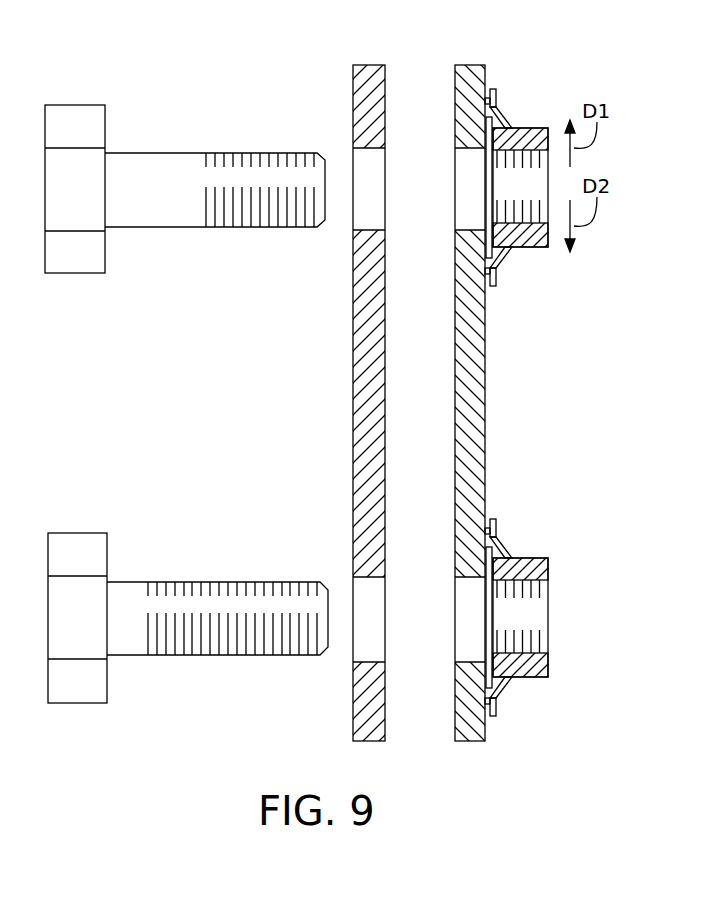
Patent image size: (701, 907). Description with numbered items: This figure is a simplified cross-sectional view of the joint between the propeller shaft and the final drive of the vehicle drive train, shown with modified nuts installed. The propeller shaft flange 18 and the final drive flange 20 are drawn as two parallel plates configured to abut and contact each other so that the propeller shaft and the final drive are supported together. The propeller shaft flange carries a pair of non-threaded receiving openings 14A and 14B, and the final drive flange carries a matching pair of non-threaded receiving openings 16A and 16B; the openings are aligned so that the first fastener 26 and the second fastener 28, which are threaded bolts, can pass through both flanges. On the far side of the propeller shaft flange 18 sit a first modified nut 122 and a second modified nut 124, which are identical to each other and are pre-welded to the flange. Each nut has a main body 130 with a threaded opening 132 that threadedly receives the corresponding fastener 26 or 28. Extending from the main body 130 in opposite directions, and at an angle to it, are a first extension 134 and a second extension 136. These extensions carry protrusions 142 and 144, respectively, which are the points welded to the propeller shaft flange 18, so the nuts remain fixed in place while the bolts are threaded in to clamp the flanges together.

The receiving opening 14A is at (485, 147).
The receiving opening 14B is at (485, 577).
The receiving opening 16A is at (353, 158).
The receiving opening 16B is at (353, 588).
The propeller shaft flange 18 is at (468, 65).
The final drive flange 20 is at (368, 65).
The first fastener 26 is at (73, 270).
The second fastener 28 is at (83, 697).
The first modified nut 122 is at (526, 118).
The second modified nut 124 is at (526, 548).
The main body 130 is at (528, 249).
The threaded opening 132 is at (521, 223).
The first extension 134 is at (495, 101).
The second extension 136 is at (497, 282).
The protrusion 142 is at (487, 101).
The protrusion 144 is at (487, 272).